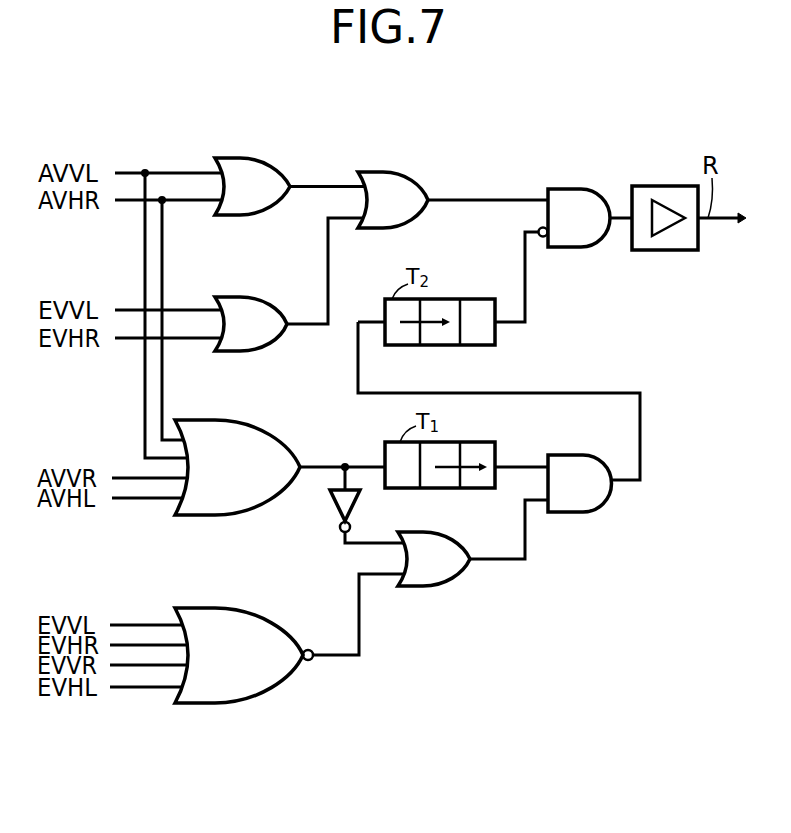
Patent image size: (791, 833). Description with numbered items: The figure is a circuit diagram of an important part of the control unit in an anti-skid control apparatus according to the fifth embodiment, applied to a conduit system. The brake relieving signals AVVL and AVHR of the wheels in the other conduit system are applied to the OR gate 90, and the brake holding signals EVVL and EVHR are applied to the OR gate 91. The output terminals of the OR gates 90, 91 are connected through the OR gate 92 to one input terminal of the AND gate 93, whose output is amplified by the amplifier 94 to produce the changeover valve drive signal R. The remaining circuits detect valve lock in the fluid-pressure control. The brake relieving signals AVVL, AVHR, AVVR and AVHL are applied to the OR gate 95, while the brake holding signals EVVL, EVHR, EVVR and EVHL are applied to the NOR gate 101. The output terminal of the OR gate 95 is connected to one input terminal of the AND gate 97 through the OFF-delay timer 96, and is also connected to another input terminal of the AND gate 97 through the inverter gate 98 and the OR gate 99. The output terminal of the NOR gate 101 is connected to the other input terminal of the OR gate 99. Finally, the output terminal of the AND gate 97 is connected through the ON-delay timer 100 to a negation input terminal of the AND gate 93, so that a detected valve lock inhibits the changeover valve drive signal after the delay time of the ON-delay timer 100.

The OR gate 90 is at (240, 158).
The OR gate 91 is at (240, 297).
The OR gate 92 is at (388, 172).
The AND gate 93 is at (573, 189).
The amplifier 94 is at (667, 186).
The OR gate 95 is at (212, 420).
The OFF-delay timer 96 is at (473, 442).
The AND gate 97 is at (578, 455).
The inverter gate 98 is at (328, 507).
The OR gate 99 is at (432, 532).
The ON-delay timer 100 is at (470, 299).
The NOR gate 101 is at (208, 608).